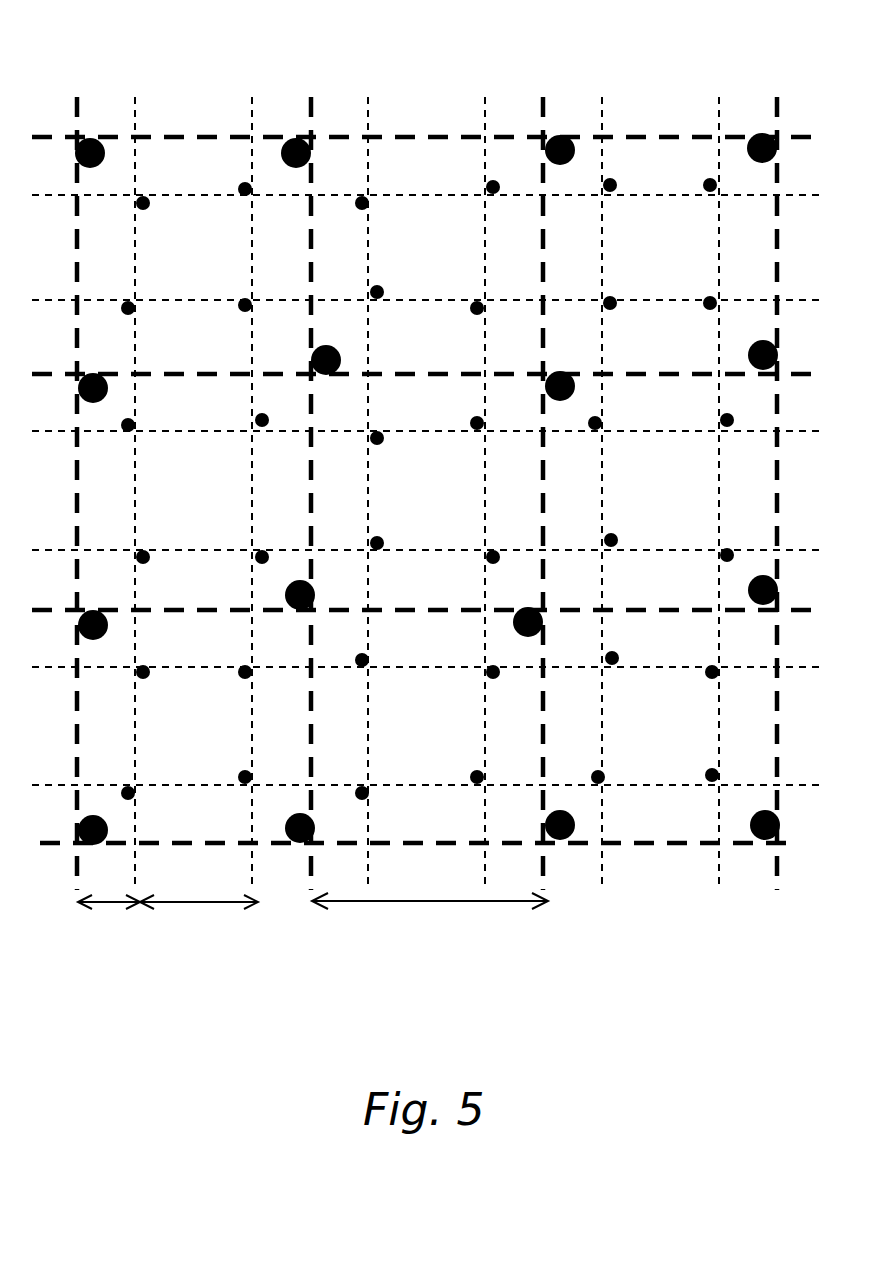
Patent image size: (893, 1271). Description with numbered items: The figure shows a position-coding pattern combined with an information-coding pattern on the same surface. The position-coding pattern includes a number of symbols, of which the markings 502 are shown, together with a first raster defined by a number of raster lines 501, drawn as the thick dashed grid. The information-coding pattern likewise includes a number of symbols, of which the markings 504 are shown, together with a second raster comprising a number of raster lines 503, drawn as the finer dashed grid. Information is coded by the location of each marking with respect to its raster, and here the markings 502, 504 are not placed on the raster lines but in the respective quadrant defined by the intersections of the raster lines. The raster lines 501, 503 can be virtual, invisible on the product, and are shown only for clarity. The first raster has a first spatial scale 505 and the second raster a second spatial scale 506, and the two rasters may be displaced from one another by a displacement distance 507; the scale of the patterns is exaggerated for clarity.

The raster lines 501 is at (183, 137).
The markings 502 is at (85, 140).
The raster lines 503 is at (432, 195).
The markings 504 is at (360, 196).
The first spatial scale 505 is at (431, 902).
The second spatial scale 506 is at (213, 903).
The displacement distance 507 is at (110, 903).